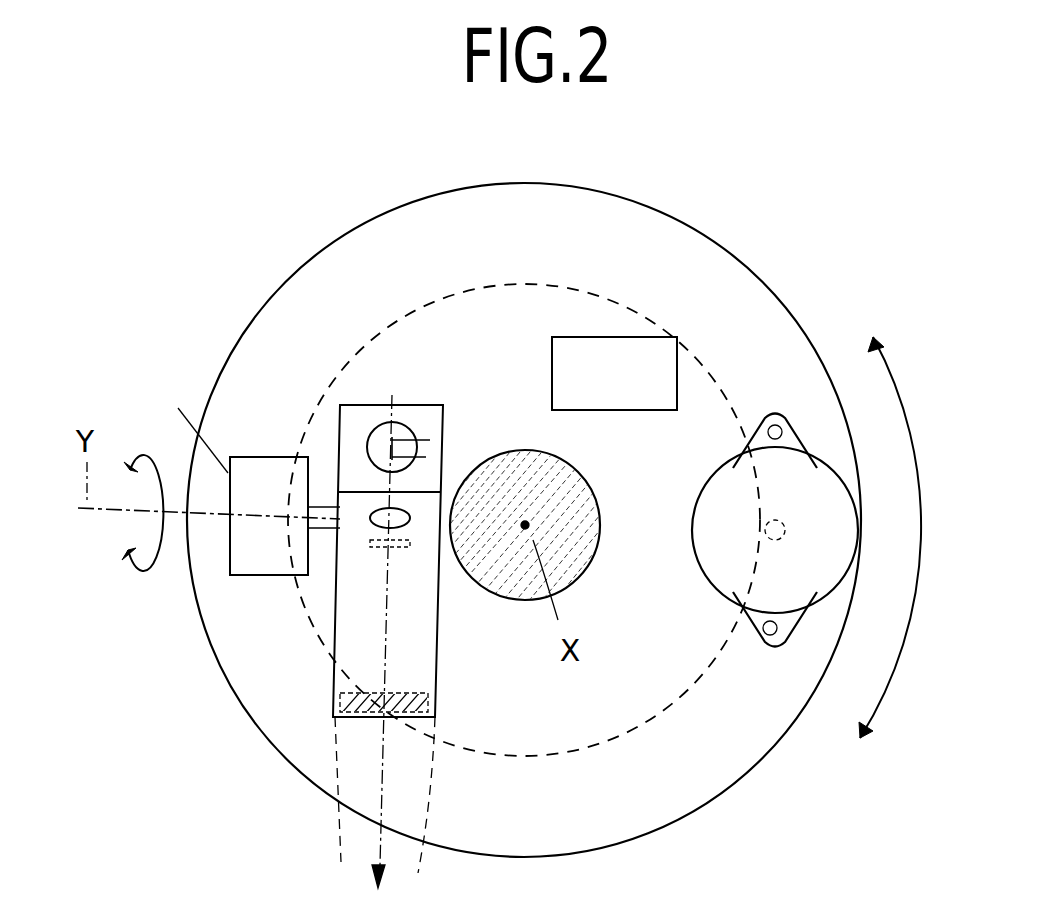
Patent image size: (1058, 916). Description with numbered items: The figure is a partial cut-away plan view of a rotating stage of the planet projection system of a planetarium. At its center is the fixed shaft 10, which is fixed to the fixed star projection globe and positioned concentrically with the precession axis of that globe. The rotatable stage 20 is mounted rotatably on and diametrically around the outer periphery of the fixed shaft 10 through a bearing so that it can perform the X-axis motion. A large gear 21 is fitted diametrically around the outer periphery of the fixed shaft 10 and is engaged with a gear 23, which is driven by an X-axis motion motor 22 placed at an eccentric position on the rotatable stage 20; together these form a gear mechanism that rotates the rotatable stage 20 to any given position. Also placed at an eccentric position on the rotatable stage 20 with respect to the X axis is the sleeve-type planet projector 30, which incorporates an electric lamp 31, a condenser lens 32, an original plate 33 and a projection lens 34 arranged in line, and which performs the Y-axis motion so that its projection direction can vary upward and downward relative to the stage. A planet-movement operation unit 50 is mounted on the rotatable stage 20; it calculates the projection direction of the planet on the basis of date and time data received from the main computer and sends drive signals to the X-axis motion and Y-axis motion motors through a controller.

The fixed shaft 10 is at (515, 440).
The rotatable stage 20 is at (675, 822).
The large gear 21 is at (548, 763).
The X-axis motion motor 22 is at (768, 650).
The gear 23 is at (762, 537).
The sleeve-type planet projector 30 is at (333, 628).
The electric lamp 31 is at (372, 425).
The condenser lens 32 is at (370, 522).
The original plate 33 is at (400, 548).
The projection lens 34 is at (350, 718).
The planet-movement operation unit 50 is at (625, 337).